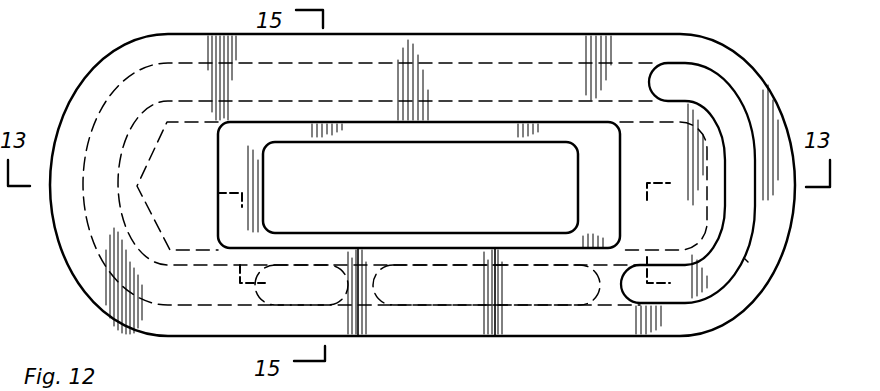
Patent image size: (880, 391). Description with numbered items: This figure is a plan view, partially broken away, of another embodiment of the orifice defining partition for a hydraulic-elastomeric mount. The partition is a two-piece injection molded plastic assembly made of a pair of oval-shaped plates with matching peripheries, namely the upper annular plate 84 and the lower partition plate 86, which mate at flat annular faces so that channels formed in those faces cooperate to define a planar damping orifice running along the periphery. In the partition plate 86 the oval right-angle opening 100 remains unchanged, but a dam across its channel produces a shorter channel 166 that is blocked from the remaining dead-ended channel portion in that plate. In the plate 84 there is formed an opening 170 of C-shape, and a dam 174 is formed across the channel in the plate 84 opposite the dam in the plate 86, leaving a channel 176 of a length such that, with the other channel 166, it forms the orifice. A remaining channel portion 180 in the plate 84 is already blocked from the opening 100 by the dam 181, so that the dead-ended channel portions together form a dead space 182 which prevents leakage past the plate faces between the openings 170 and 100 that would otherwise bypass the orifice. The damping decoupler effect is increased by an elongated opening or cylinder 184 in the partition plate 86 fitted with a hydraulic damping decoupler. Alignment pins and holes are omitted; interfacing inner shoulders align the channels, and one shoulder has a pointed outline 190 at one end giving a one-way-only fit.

The upper annular plate 84 is at (742, 80).
The lower partition plate 86 is at (365, 130).
The opening 100 is at (290, 274).
The shorter channel 166 is at (742, 222).
The C-shaped opening 170 is at (748, 264).
The dam 174 is at (600, 272).
The channel 176 is at (455, 66).
The remaining channel portion 180 is at (541, 277).
The dam 181 is at (361, 287).
The dead space 182 is at (440, 278).
The elongated opening or cylinder 184 is at (484, 148).
The pointed outline 190 is at (160, 137).